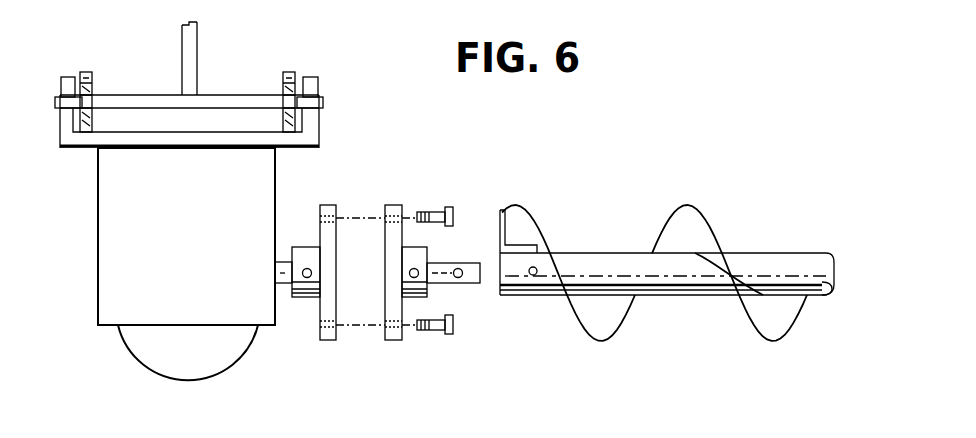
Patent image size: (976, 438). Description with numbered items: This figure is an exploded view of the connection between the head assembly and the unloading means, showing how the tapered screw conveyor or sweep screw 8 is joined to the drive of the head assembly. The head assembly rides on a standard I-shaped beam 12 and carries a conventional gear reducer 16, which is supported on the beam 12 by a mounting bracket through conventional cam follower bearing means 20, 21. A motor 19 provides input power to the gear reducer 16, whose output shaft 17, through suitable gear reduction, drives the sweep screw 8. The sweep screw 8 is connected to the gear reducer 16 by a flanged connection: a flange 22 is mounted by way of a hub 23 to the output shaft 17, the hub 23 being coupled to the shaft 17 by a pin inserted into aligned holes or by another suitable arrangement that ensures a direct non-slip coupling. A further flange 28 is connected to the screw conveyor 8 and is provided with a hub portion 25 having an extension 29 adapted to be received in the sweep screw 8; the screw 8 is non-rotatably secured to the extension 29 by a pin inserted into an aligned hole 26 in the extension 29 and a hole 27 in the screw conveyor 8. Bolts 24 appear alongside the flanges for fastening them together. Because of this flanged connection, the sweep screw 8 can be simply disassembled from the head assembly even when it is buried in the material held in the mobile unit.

The tapered screw conveyor or sweep screw 8 is at (770, 247).
The I-shaped beam 12 is at (182, 53).
The gear reducer 16 is at (98, 183).
The output shaft 17 is at (283, 262).
The motor 19 is at (242, 357).
The cam follower bearing means 20 is at (86, 70).
The cam follower bearing means 21 is at (80, 119).
The flange 22 is at (337, 208).
The hub 23 is at (293, 298).
The bolt 24 is at (440, 211).
The hub portion 25 is at (430, 244).
The hole 26 is at (463, 268).
The hole 27 is at (536, 268).
The further flange 28 is at (392, 302).
The extension 29 is at (479, 285).